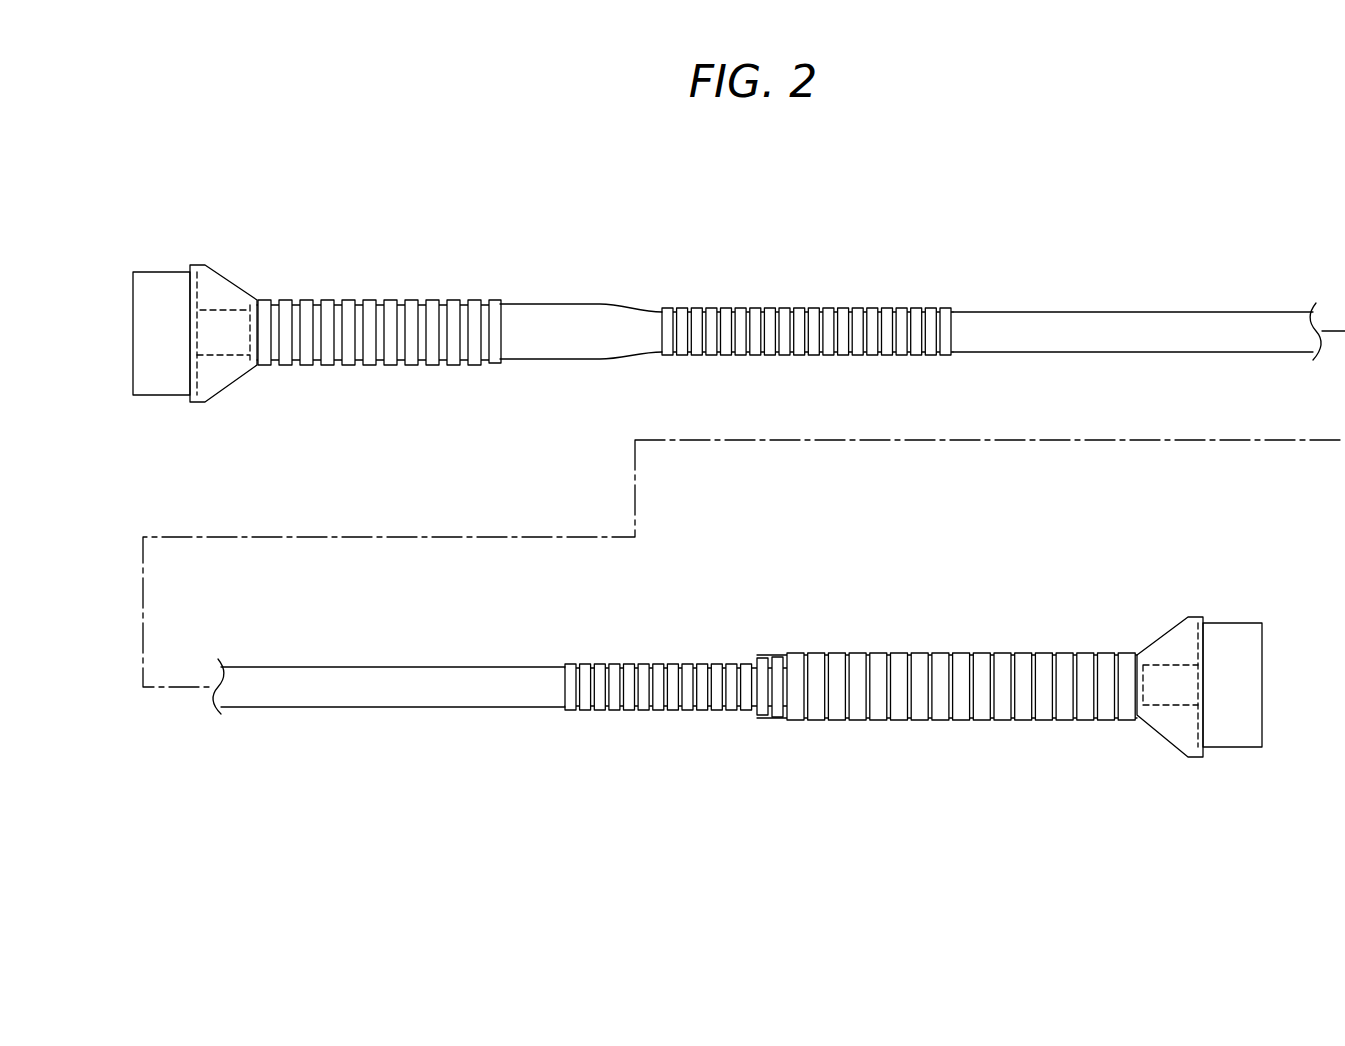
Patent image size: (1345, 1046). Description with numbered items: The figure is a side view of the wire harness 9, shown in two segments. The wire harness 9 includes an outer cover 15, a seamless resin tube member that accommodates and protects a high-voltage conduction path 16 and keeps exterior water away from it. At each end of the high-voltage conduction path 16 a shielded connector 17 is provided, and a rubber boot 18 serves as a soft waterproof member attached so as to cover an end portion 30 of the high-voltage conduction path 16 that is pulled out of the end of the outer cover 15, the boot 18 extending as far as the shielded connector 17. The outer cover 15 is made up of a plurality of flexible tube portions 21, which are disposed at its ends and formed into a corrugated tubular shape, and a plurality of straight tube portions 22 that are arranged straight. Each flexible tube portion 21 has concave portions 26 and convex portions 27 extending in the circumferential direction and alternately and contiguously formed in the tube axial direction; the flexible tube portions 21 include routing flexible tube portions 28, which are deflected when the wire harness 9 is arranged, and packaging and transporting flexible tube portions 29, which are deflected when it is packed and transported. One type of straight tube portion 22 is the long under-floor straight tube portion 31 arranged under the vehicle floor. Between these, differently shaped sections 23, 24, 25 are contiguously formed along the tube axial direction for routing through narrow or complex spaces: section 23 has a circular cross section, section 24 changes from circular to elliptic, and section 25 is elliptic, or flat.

The wire harness 9 is at (1104, 255).
The outer cover 15 is at (995, 310).
The high-voltage conduction path 16 is at (1133, 330).
The shielded connector 17 is at (163, 386).
The boot 18 is at (226, 275).
The flexible tube portion 21 is at (408, 299).
The straight tube portion 22 is at (517, 303).
The differently shaped section 23 is at (573, 363).
The differently shaped section 24 is at (623, 358).
The differently shaped section 25 is at (868, 370).
The concave portion 26 is at (482, 367).
The convex portion 27 is at (495, 367).
The routing flexible tube portion 28 is at (348, 368).
The packaging and transporting flexible tube portion 29 is at (743, 307).
The end portion 30 is at (220, 335).
The under-floor straight tube portion 31 is at (1258, 343).